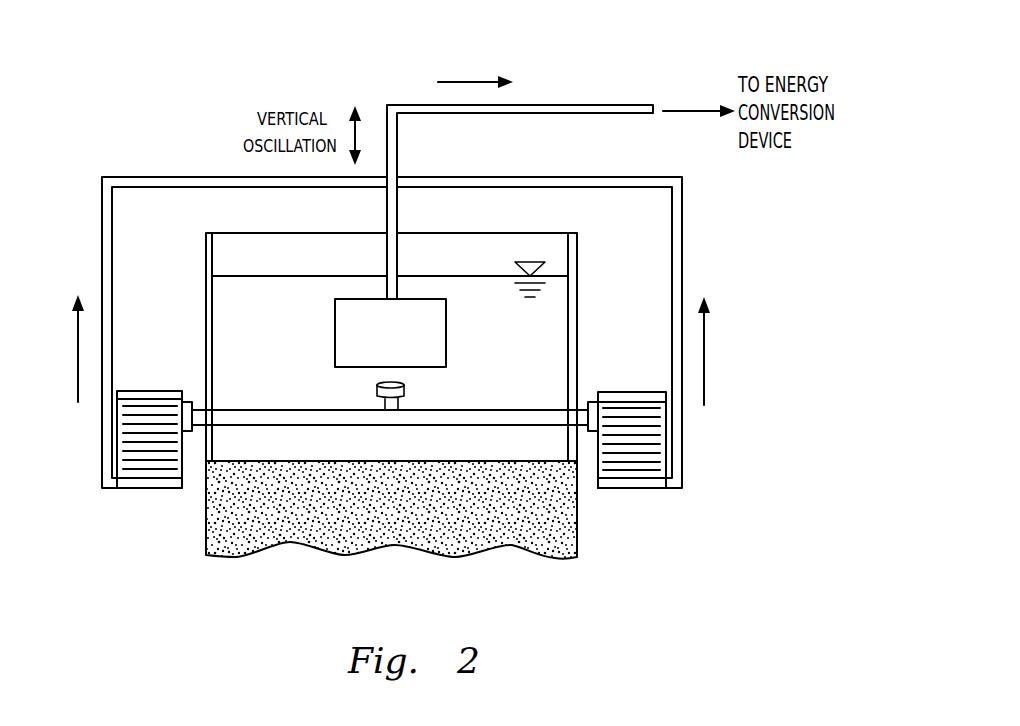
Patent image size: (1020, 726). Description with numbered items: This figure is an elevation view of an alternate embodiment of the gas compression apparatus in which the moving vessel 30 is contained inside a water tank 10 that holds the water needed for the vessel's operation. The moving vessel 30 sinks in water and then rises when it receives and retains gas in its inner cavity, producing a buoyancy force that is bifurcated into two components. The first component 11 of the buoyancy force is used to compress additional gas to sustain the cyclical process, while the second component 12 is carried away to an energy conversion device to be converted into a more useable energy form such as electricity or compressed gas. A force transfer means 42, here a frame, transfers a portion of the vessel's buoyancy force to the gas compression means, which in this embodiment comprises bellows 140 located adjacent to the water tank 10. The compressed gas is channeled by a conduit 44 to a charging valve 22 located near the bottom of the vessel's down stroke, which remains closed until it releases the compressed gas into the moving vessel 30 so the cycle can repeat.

The water tank 10 is at (206, 276).
The first component of the buoyancy force 11 is at (78, 358).
The second component of the buoyancy force 12 is at (478, 80).
The charging valve 22 is at (404, 393).
The moving vessel 30 is at (446, 328).
The force transfer means 42 is at (200, 177).
The conduit 44 is at (253, 409).
The bellows 140 is at (150, 390).